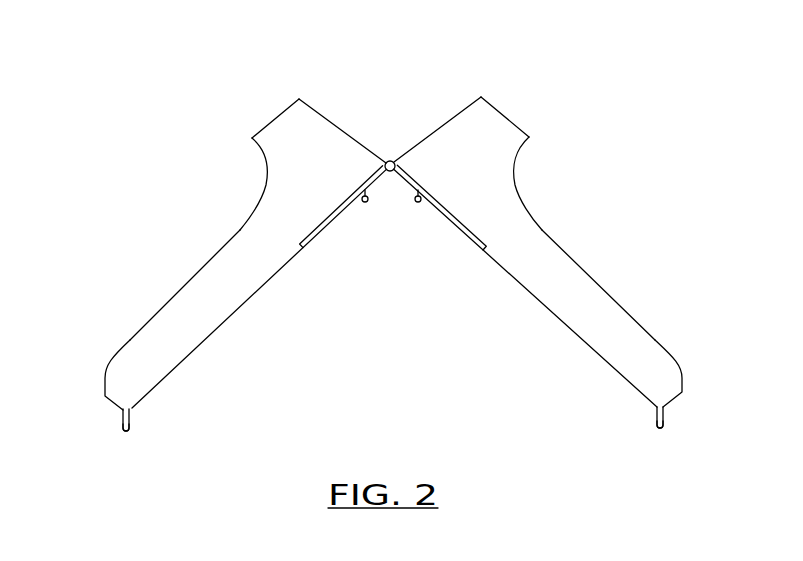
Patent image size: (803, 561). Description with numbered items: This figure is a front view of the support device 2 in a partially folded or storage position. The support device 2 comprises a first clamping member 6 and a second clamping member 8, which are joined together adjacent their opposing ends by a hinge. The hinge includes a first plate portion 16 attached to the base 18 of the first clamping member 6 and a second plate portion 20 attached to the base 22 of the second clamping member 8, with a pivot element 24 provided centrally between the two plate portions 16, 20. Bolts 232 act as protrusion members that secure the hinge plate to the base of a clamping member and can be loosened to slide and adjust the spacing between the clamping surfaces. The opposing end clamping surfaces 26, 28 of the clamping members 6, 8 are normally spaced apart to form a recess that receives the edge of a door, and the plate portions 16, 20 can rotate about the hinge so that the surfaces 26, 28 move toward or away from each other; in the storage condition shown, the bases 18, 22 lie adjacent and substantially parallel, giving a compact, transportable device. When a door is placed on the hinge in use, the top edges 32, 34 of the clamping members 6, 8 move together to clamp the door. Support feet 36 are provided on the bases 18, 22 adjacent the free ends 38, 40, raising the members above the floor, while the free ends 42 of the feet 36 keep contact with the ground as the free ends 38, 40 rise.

The support device 2 is at (512, 104).
The first clamping member 6 is at (290, 127).
The second clamping member 8 is at (498, 138).
The first plate portion 16 is at (318, 233).
The base 18 is at (225, 320).
The second plate portion 20 is at (465, 233).
The base 22 is at (557, 316).
The pivot element 24 is at (390, 160).
The end clamping surface 26 is at (327, 120).
The end clamping surface 28 is at (453, 118).
The top edge 32 is at (299, 99).
The top edge 34 is at (481, 97).
The support foot 36 is at (130, 420).
The free end 38 is at (110, 400).
The free end 40 is at (675, 400).
The free end of foot 42 is at (127, 432).
The bolt 232 is at (365, 203).